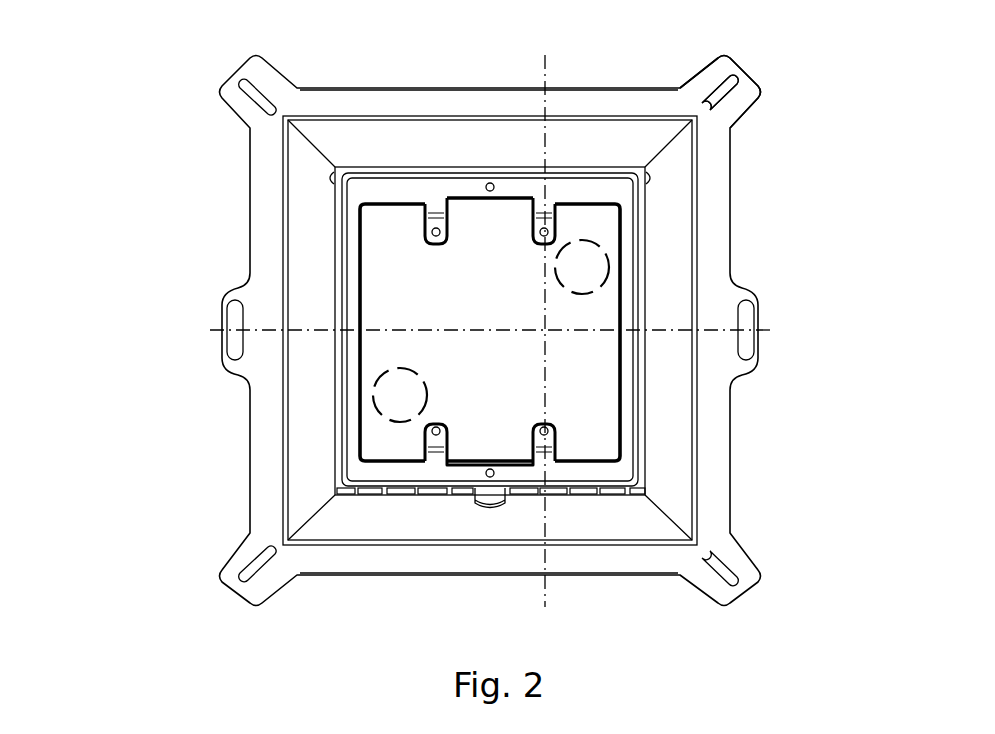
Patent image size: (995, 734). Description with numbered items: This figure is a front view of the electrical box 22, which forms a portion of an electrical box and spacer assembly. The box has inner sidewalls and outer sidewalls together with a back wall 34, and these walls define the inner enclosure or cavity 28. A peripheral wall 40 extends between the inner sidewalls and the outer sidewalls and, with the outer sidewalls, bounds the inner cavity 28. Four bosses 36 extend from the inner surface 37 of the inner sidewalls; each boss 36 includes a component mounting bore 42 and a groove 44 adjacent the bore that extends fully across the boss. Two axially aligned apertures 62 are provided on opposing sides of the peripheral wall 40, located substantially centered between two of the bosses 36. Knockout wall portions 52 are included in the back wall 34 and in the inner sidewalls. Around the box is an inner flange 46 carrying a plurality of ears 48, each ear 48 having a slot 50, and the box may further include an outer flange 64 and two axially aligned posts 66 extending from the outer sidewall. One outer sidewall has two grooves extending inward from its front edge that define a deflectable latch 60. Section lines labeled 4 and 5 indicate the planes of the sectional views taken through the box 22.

The electrical box 22 is at (188, 173).
The inner enclosure or cavity 28 is at (592, 421).
The back wall 34 is at (490, 332).
The boss 36 is at (537, 246).
The inner surface 37 is at (520, 204).
The peripheral wall 40 is at (630, 228).
The component mounting bore 42 is at (437, 246).
The groove 44 is at (425, 215).
The inner flange 46 is at (713, 330).
The ear 48 is at (745, 76).
The slot 50 is at (718, 97).
The knockout wall portion 52 is at (400, 395).
The deflectable latch 60 is at (491, 510).
The axially aligned apertures or bores 62 is at (490, 183).
The outer flange 64 is at (665, 331).
The axially aligned posts 66 is at (655, 178).
The section line 4- 4 is at (545, 62).
The section line 5- 5 is at (210, 262).